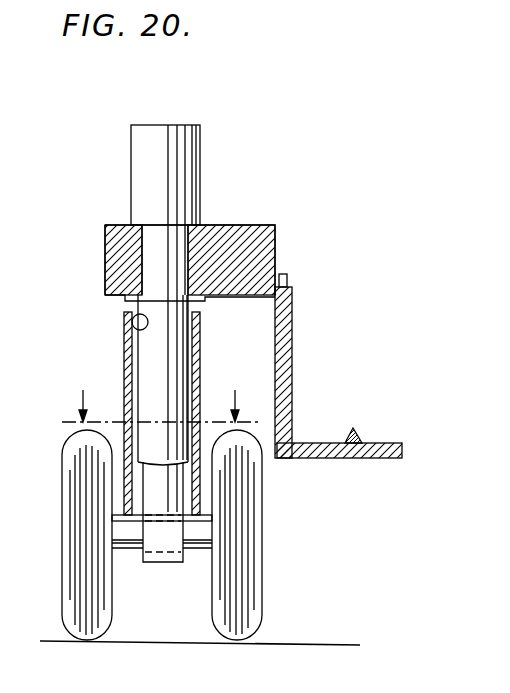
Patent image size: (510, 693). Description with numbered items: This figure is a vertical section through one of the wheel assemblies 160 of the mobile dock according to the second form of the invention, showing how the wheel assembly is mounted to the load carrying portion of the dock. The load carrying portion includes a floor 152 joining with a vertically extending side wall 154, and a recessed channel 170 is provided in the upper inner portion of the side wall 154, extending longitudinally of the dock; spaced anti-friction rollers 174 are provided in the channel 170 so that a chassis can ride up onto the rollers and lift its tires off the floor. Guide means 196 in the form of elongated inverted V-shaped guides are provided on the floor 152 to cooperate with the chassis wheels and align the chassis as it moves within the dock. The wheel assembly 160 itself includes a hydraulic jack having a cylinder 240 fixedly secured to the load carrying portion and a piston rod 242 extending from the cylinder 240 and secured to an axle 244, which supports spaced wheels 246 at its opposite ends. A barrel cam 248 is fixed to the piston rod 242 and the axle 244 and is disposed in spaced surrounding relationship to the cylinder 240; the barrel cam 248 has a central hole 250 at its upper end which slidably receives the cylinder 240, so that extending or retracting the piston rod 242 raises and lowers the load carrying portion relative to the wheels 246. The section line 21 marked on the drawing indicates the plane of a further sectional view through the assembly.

The recessed channel 170 is at (273, 236).
The rollers 174 is at (285, 275).
The side wall 154 is at (294, 341).
The floor 152 is at (335, 458).
The guide means 196 is at (353, 429).
The wheel assembly 160 is at (82, 331).
The central hole 250 is at (133, 328).
The barrel cam 248 is at (126, 380).
The cylinder 240 is at (168, 363).
The piston rod 242 is at (165, 497).
The axle 244 is at (196, 540).
The wheels 246 is at (72, 574).
The section line 21 is at (156, 406).